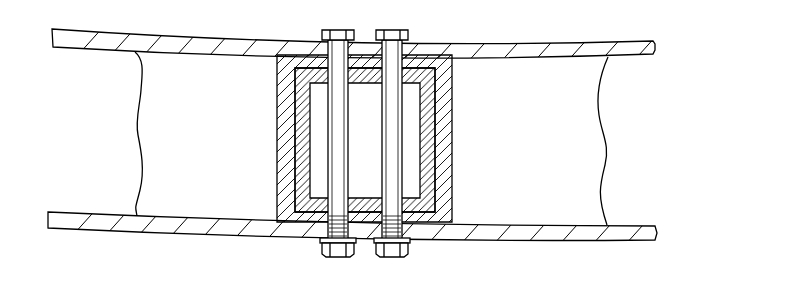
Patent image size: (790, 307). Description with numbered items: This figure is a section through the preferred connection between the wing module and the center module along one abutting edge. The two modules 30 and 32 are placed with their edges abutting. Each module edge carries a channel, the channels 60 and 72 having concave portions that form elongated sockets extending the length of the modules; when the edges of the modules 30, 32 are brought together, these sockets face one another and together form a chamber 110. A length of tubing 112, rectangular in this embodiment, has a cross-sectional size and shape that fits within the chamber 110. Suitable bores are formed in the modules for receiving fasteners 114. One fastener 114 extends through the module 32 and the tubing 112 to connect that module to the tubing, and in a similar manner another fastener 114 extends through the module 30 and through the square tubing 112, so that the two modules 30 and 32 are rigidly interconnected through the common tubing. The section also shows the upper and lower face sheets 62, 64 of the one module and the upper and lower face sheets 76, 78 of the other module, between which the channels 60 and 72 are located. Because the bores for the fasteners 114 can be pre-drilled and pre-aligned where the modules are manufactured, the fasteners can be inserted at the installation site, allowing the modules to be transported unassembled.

The module 30 is at (213, 234).
The module 32 is at (628, 203).
The channel 60 is at (277, 124).
The upper face sheet 62 is at (231, 46).
The lower face sheet 64 is at (136, 235).
The channel 72 is at (452, 153).
The upper face sheet 76 is at (504, 51).
The lower face sheet 78 is at (590, 240).
The chamber 110 is at (272, 236).
The tubing 112 is at (304, 147).
The fastener 114 is at (332, 30).